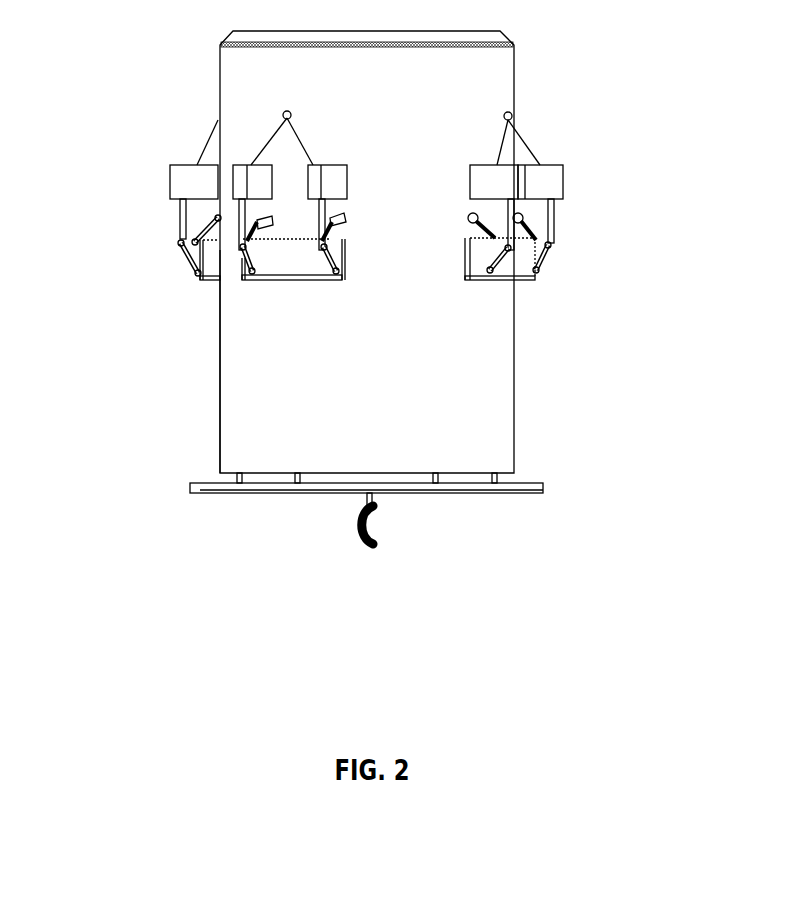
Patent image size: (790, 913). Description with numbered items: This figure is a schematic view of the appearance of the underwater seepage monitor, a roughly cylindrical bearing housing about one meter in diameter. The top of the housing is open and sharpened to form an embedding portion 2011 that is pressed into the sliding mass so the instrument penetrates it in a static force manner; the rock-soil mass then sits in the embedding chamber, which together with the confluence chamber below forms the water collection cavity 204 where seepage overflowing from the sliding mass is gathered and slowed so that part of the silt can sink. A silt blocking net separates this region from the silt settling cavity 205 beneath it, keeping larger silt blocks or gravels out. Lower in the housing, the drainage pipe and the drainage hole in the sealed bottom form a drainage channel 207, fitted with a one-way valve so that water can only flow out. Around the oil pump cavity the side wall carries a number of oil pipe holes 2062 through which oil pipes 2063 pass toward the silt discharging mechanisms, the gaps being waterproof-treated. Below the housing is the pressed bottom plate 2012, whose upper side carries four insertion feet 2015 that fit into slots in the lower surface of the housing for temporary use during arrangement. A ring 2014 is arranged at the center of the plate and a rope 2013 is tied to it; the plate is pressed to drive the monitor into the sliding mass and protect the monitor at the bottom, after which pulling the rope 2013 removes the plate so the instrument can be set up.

The embedding portion 2011 is at (227, 43).
The water collection cavity 204 is at (233, 82).
The silt settling cavity 205 is at (233, 313).
The drainage channel 207 is at (237, 418).
The oil pipe holes 2062 is at (512, 114).
The oil pipes 2063 is at (527, 145).
The insertion feet 2015 is at (495, 478).
The pressed bottom plate 2012 is at (212, 489).
The ring 2014 is at (365, 503).
The rope 2013 is at (357, 532).